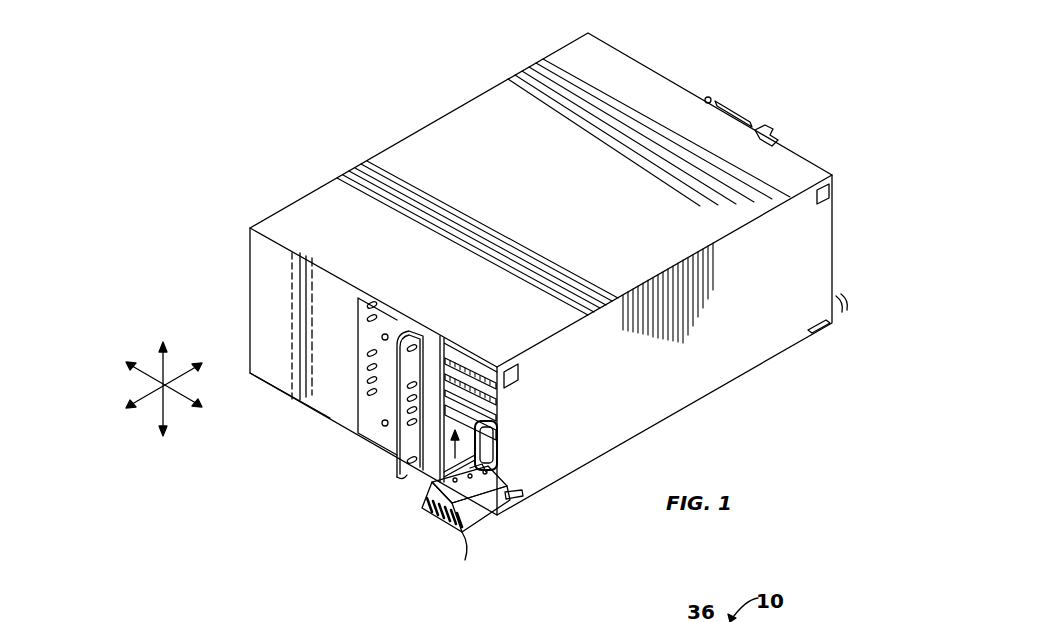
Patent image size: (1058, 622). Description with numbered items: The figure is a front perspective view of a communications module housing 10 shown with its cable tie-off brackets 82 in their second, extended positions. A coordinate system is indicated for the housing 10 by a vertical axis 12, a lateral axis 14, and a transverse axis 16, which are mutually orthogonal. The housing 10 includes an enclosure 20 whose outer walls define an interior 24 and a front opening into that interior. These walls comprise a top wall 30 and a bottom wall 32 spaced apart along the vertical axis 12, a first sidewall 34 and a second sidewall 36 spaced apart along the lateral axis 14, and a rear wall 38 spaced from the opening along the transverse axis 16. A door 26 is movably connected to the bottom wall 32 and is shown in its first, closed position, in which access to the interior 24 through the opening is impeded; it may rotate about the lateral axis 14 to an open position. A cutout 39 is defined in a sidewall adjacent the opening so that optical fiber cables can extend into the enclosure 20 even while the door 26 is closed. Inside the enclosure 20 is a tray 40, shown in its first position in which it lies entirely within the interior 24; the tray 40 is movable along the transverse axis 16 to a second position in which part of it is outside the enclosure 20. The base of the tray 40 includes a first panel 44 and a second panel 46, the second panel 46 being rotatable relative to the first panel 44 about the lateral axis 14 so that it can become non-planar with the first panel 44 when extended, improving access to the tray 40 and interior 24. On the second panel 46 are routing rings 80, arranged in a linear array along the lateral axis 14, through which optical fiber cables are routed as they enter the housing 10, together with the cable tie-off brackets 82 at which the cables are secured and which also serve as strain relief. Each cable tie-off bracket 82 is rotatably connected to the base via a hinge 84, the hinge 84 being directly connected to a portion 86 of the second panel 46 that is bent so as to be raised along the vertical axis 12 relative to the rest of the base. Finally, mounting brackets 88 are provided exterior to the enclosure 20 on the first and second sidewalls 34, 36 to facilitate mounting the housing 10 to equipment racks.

The housing 10 is at (724, 30).
The vertical axis 12 is at (162, 373).
The lateral axis 14 is at (147, 400).
The transverse axis 16 is at (140, 372).
The enclosure 20 is at (425, 172).
The interior 24 is at (423, 498).
The door 26 is at (743, 363).
The top wall 30 is at (502, 130).
The bottom wall 32 is at (330, 420).
The first sidewall 34 is at (262, 403).
The second sidewall 36 is at (681, 82).
The rear wall 38 is at (246, 302).
The cutout 39 is at (473, 530).
The tray 40 is at (458, 377).
The first panel 44 is at (487, 410).
The second panel 46 is at (428, 523).
The routing ring 80 is at (492, 430).
The cable tie-off bracket 82 is at (848, 299).
The hinge 84 is at (450, 520).
The portion 86 is at (503, 510).
The mounting bracket 88 is at (791, 146).